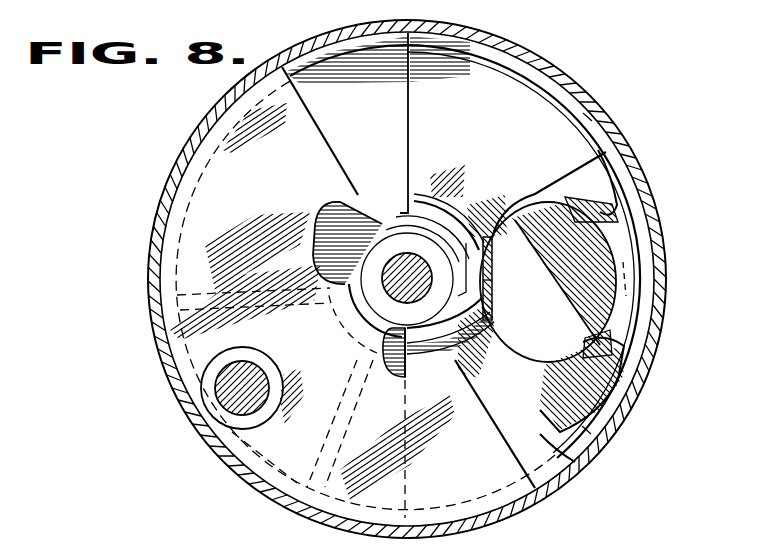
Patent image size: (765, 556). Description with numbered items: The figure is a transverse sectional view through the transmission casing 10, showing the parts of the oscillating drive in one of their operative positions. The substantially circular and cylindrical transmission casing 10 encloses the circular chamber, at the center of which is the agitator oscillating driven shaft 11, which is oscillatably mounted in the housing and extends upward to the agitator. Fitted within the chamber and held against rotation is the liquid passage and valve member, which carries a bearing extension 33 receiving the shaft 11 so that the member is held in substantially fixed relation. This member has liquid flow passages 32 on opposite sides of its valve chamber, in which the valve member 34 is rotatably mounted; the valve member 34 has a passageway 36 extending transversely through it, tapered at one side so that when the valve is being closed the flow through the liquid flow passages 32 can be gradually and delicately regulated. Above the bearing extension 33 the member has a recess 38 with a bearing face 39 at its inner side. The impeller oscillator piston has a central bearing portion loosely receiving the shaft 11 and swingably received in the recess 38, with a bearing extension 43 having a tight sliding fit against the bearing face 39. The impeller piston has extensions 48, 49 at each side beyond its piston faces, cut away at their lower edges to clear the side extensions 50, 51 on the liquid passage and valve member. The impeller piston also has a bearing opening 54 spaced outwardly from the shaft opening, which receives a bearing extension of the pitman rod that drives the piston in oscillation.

The transmission casing 10 is at (652, 200).
The agitator oscillating driven shaft 11 is at (400, 304).
The liquid flow passages 32 is at (536, 198).
The bearing extension 33 is at (385, 226).
The valve member 34 is at (602, 298).
The passageway 36 is at (570, 335).
The recess 38 is at (493, 257).
The bearing face 39 is at (493, 294).
The bearing extension 43 is at (468, 224).
The extension 48 is at (320, 127).
The extension 49 is at (494, 413).
The side extension 50 is at (570, 60).
The side extension 51 is at (573, 455).
The bearing opening 54 is at (283, 381).